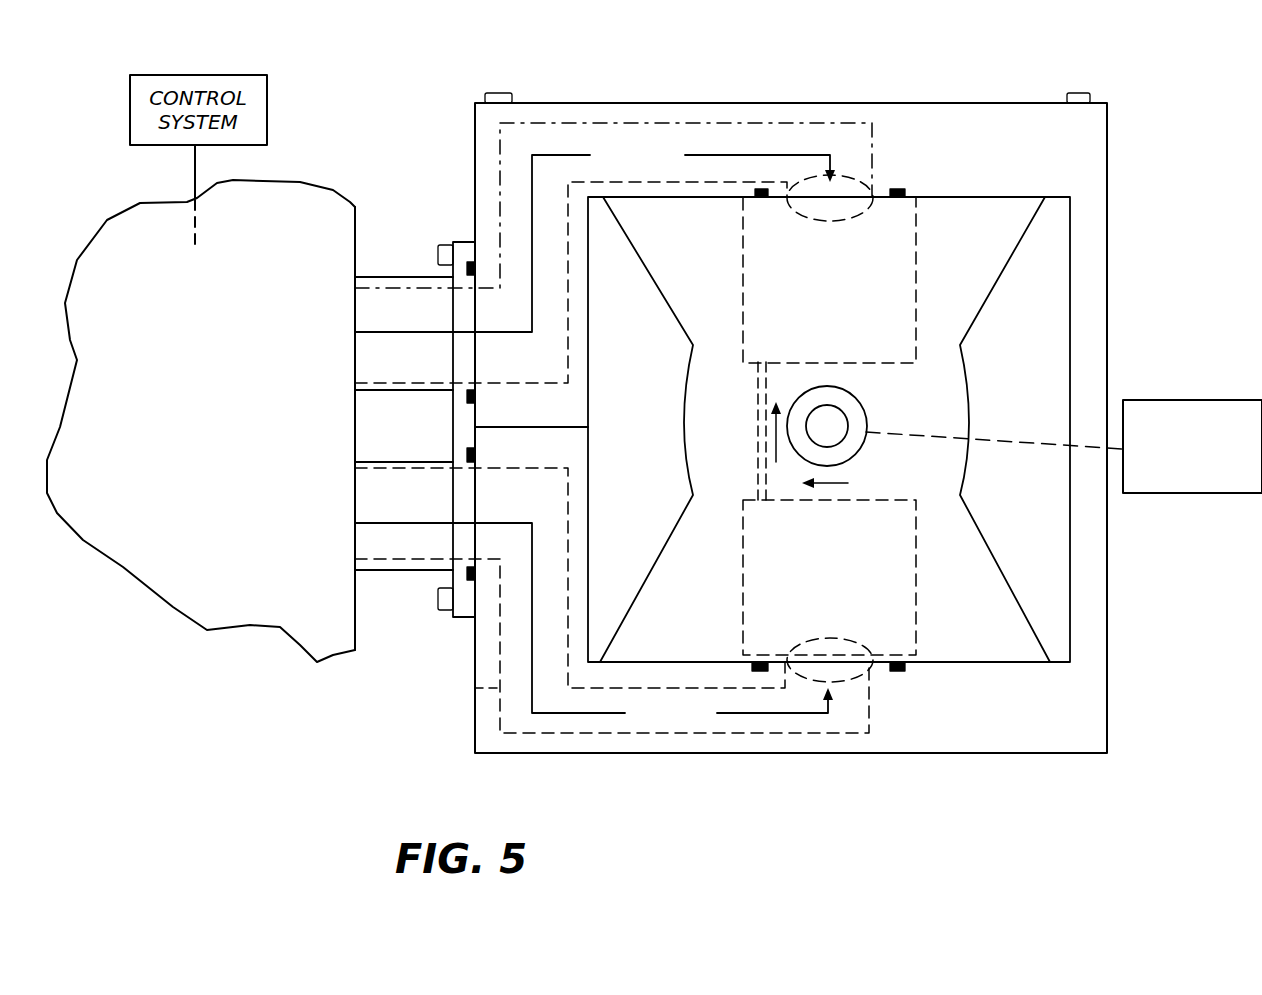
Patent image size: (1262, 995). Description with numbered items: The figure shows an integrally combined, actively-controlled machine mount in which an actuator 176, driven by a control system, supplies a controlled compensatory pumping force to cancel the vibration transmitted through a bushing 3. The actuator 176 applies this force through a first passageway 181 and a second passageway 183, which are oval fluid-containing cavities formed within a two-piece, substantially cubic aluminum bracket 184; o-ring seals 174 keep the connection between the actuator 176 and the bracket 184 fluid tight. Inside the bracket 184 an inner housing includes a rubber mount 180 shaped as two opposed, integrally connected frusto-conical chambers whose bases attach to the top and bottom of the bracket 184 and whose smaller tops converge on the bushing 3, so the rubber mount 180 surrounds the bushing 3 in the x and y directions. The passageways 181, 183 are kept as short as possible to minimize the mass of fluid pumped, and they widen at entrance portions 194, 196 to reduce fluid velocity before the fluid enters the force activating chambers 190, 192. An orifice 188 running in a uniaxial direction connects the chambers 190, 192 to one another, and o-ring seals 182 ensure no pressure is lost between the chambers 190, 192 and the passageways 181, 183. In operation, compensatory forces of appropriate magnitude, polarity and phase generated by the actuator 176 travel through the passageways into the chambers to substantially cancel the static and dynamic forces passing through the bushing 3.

The bushing 3 is at (866, 428).
The o-ring seals 174 is at (475, 587).
The actuator 176 is at (220, 385).
The rubber mount 180 is at (1018, 600).
The first passageway 181 is at (403, 326).
The o-ring seals 182 is at (762, 192).
The second passageway 183 is at (403, 530).
The bracket 184 is at (1107, 150).
The orifice 188 is at (760, 468).
The force activating chamber 190 is at (917, 278).
The force activating chamber 192 is at (900, 630).
The entrance portion 194 is at (845, 672).
The entrance portion 196 is at (957, 77).